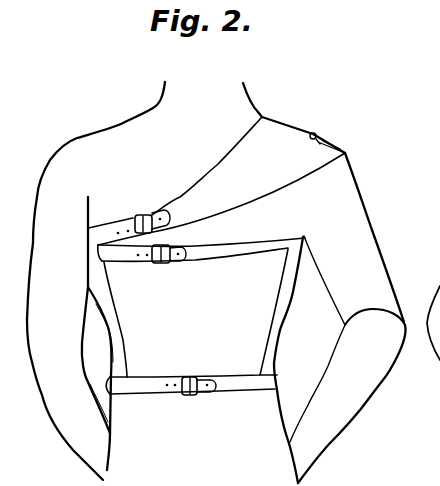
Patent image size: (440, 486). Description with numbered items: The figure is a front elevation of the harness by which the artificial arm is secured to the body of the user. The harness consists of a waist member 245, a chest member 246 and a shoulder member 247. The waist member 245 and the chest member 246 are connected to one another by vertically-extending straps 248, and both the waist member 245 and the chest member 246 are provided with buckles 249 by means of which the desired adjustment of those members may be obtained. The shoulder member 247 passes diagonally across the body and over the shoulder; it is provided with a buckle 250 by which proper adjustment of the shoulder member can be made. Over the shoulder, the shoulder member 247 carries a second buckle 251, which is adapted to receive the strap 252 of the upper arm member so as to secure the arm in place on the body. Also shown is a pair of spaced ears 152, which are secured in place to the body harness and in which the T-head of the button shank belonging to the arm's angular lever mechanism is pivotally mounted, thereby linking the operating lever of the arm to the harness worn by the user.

The spaced ears 152 is at (312, 243).
The waist member 245 is at (228, 378).
The chest member 246 is at (238, 248).
The shoulder member 247 is at (283, 157).
The vertically-extending straps 248 is at (117, 347).
The buckles 249 is at (183, 245).
The buckle 250 is at (144, 216).
The second buckle 251 is at (328, 138).
The strap 252 is at (314, 133).